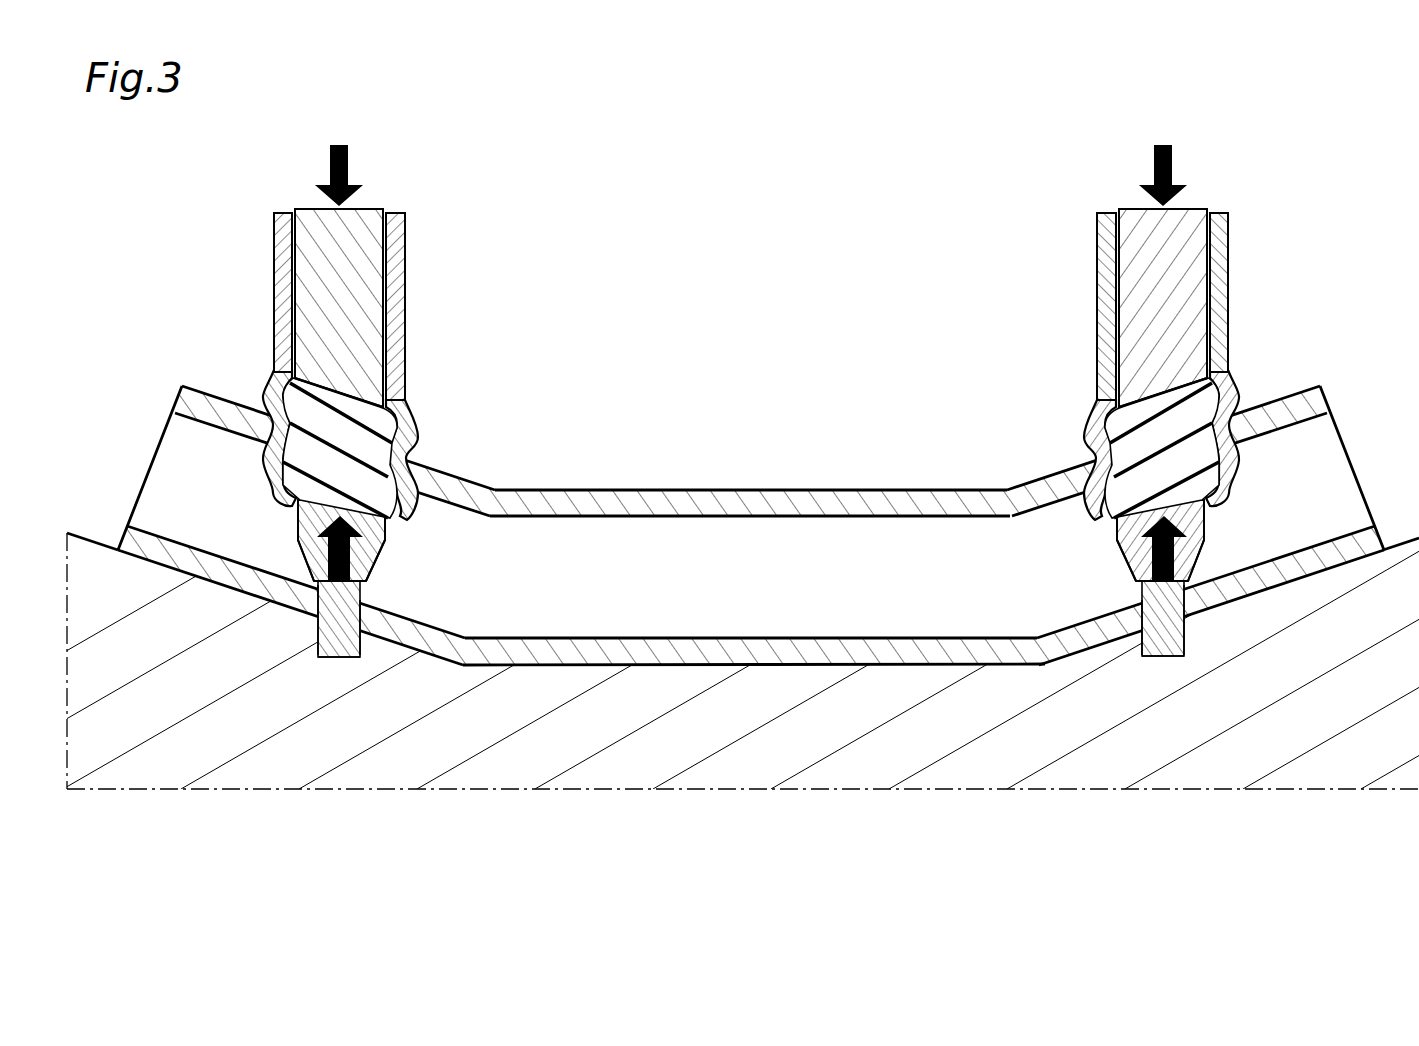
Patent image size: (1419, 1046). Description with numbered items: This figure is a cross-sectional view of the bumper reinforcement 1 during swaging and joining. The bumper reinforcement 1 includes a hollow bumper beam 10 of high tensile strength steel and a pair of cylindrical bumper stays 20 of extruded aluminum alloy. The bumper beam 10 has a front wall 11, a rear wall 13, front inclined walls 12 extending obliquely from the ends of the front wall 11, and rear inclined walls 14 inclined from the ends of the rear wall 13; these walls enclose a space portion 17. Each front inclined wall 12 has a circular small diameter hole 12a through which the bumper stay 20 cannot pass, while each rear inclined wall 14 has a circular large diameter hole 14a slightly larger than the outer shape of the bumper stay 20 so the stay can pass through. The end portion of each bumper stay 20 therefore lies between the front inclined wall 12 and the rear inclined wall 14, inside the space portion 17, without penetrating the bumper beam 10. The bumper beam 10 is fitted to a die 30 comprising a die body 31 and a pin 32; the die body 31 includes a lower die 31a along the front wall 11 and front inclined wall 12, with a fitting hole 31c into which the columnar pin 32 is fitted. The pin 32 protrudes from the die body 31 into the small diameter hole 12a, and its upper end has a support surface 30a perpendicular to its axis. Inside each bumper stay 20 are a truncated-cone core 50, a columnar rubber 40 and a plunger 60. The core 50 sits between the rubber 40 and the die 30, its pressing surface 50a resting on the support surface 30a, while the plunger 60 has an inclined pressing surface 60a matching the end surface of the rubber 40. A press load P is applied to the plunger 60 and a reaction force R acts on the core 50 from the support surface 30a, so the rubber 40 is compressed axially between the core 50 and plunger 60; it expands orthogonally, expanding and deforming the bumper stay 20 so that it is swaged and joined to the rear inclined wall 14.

The bumper reinforcement 1 is at (1322, 132).
The bumper beam 10 is at (751, 515).
The front wall 11 is at (760, 660).
The front inclined wall 12 is at (218, 572).
The small diameter hole 12a is at (330, 618).
The rear wall 13 is at (750, 502).
The rear inclined wall 14 is at (223, 407).
The large diameter hole 14a is at (405, 456).
The space portion 17 is at (752, 577).
The bumper stay 20 is at (397, 292).
The die 30 is at (709, 693).
The support surface 30a is at (367, 570).
The die body 31 is at (1307, 775).
The lower die 31a is at (688, 777).
The fitting hole 31c is at (350, 658).
The pin 32 is at (323, 659).
The rubber 40 is at (355, 440).
The core 50 is at (765, 539).
The pressing surface 50a is at (316, 581).
The plunger 60 is at (751, 302).
The pressing surface 60a is at (300, 397).
The press load P is at (325, 160).
The reaction force R is at (300, 548).